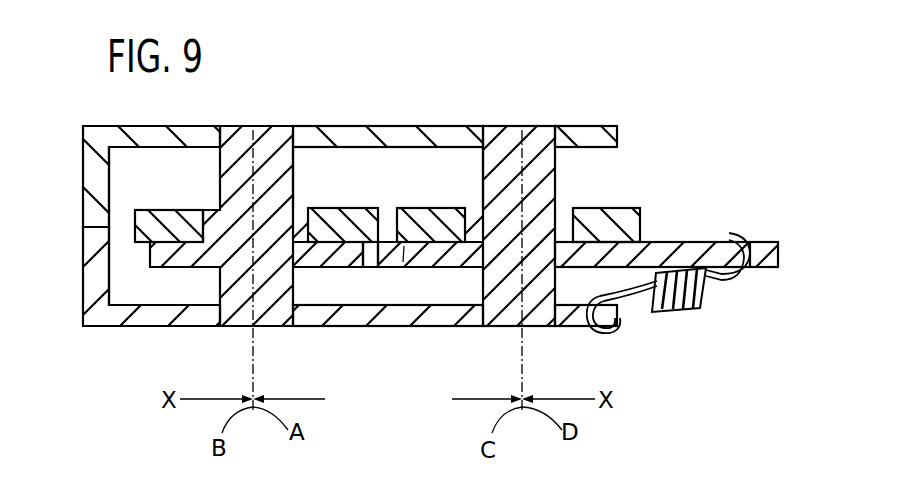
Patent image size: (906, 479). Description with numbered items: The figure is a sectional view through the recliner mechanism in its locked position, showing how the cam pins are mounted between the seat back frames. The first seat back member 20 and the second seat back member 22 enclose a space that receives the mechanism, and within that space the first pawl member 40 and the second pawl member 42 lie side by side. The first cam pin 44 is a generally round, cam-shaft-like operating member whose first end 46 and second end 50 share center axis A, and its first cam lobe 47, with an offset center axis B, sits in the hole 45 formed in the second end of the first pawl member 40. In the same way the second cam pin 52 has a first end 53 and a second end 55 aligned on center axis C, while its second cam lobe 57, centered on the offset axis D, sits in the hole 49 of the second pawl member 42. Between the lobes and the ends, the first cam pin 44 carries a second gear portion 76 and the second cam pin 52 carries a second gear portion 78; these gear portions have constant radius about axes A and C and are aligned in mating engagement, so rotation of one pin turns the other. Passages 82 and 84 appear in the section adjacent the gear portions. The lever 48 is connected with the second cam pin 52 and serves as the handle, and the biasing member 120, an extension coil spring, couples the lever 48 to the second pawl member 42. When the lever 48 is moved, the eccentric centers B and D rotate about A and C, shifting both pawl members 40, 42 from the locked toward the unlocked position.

The first seat back member 20 is at (97, 328).
The second seat back member 22 is at (97, 126).
The first pawl member 40 is at (147, 205).
The second pawl member 42 is at (633, 199).
The first cam pin 44 is at (302, 159).
The hole 45 is at (304, 208).
The first end of first cam pin 46 is at (246, 138).
The first cam lobe 47 is at (208, 206).
The lever 48 is at (770, 243).
The hole 49 is at (468, 208).
The second end of first cam pin 50 is at (229, 330).
The second cam pin 52 is at (474, 159).
The first end of second cam pin 53 is at (494, 128).
The second end of second cam pin 55 is at (500, 330).
The second cam lobe 57 is at (568, 207).
The second gear portion 76 is at (333, 276).
The second gear portion 78 is at (442, 276).
The passage 82 is at (354, 268).
The passage 84 is at (392, 268).
The biasing member 120 is at (675, 307).